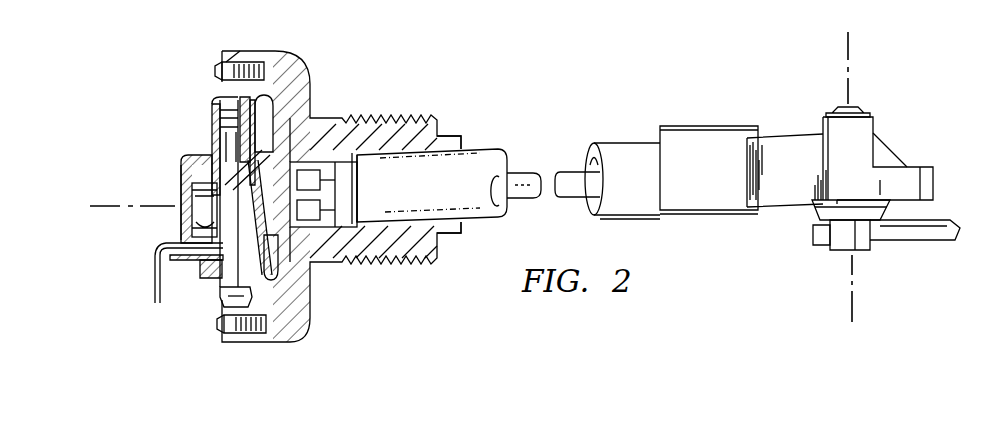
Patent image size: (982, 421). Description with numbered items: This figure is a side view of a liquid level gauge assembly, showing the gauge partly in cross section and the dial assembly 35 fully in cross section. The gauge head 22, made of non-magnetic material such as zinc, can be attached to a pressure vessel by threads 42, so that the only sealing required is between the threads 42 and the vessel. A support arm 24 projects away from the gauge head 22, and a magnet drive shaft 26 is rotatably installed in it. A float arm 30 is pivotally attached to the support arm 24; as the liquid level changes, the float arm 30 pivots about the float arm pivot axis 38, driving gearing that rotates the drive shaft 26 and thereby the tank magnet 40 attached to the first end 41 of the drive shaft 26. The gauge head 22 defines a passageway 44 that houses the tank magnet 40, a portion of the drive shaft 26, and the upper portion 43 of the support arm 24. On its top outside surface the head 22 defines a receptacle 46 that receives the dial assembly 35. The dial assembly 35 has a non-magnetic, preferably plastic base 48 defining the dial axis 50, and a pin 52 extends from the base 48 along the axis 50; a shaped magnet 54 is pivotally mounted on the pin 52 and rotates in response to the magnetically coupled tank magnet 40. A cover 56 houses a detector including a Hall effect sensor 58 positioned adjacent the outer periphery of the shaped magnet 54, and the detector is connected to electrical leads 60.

The gauge head 22 is at (390, 113).
The support arm 24 is at (618, 140).
The magnet drive shaft 26 is at (525, 168).
The float arm 30 is at (913, 241).
The dial assembly 35 is at (175, 181).
The float arm pivot axis 38 is at (850, 45).
The tank magnet 40 is at (285, 250).
The first end of the drive shaft 41 is at (340, 125).
The threads 42 is at (418, 264).
The upper portion of the support arm 43 is at (375, 263).
The passageway 44 is at (333, 262).
The receptacle 46 is at (262, 108).
The base 48 is at (312, 330).
The dial axis 50 is at (100, 208).
The pin 52 is at (186, 157).
The shaped magnet 54 is at (276, 145).
The cover 56 is at (212, 104).
The Hall effect sensor 58 is at (182, 221).
The electrical leads 60 is at (162, 283).